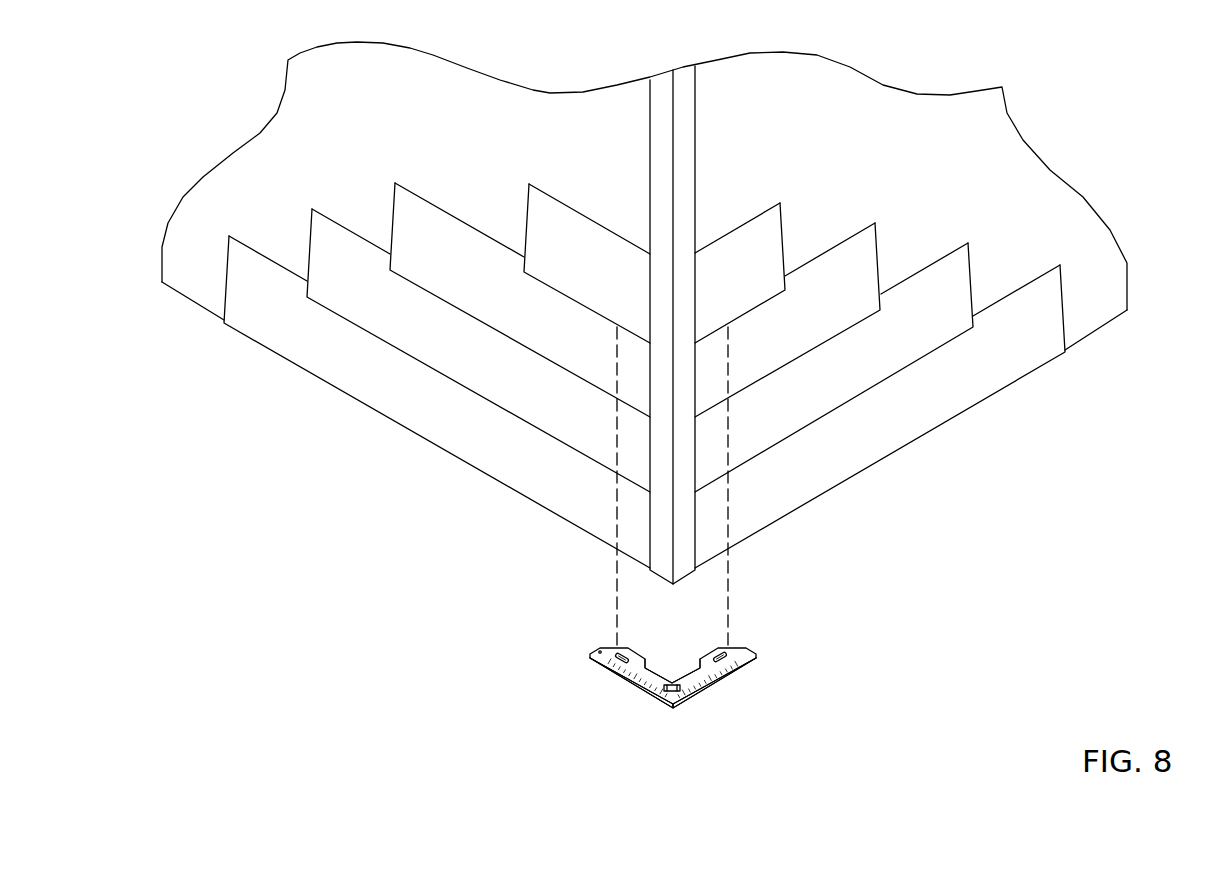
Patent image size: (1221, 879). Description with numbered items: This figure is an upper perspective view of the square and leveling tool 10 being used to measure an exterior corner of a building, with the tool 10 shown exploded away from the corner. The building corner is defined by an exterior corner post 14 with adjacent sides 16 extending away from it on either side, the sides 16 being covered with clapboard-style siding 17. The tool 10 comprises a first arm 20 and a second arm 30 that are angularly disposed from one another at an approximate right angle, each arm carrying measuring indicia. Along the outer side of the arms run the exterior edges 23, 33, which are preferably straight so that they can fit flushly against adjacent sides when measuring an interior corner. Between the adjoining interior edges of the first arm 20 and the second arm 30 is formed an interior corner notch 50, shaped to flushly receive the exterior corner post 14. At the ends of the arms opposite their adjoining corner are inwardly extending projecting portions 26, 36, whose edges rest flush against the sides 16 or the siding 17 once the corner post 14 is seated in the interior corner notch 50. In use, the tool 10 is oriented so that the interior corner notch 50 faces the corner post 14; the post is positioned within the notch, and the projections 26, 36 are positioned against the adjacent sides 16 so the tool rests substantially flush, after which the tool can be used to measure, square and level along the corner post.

The square and leveling tool 10 is at (675, 680).
The exterior corner post 14 is at (673, 212).
The adjacent sides 16 is at (190, 300).
The siding 17 is at (467, 390).
The first arm 20 is at (618, 681).
The exterior edge 23 is at (632, 663).
The projecting portion 26 is at (638, 660).
The second arm 30 is at (717, 680).
The exterior edge 33 is at (713, 675).
The projecting portion 36 is at (708, 657).
The interior corner notch 50 is at (672, 665).